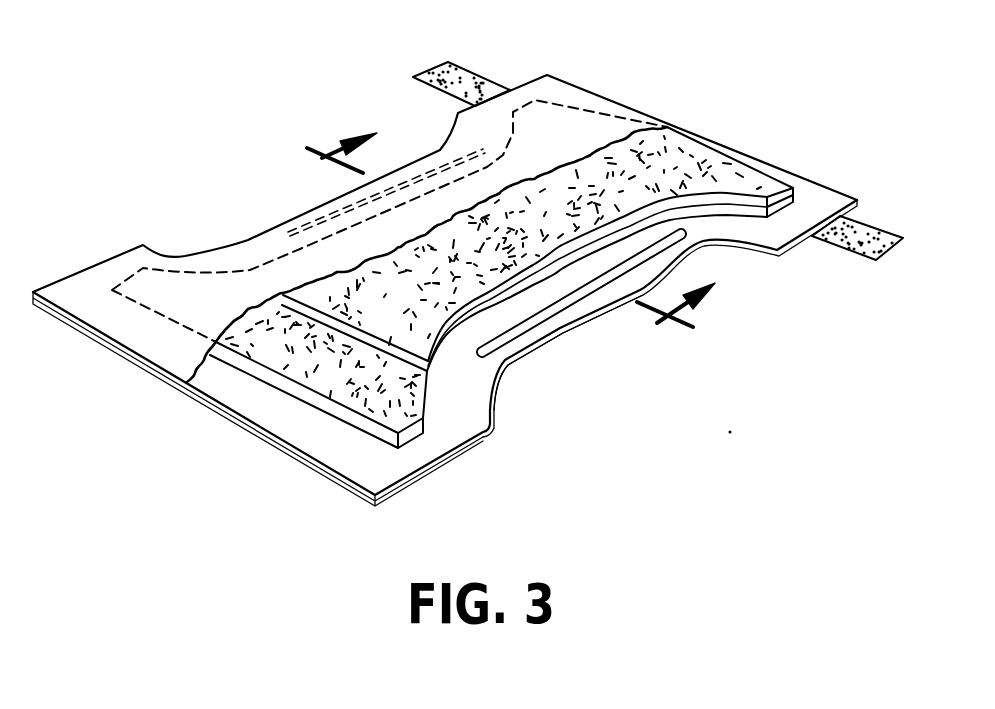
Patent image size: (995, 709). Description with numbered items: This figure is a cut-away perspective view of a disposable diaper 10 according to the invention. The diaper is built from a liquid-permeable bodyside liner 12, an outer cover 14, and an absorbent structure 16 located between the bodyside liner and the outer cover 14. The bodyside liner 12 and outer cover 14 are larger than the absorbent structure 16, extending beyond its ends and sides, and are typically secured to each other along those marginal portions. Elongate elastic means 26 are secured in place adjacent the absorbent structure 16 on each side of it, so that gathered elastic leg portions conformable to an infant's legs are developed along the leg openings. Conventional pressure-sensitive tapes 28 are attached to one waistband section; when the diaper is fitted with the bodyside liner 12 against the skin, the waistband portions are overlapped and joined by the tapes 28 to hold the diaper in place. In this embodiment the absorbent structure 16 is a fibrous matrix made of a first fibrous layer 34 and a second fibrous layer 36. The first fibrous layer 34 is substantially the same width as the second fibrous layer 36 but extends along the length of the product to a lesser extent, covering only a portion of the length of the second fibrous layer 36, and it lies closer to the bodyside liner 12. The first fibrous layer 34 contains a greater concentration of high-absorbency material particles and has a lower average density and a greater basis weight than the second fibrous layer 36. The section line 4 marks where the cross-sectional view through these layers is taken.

The disposable diaper 10 is at (812, 68).
The bodyside liner 12 is at (185, 355).
The outer cover 14 is at (470, 388).
The absorbent structure 16 is at (743, 167).
The elongate elastic means 26 is at (285, 236).
The pressure-sensitive tapes 28 is at (432, 64).
The first fibrous layer 34 is at (678, 157).
The second fibrous layer 36 is at (408, 414).
The section line 4- 4 is at (498, 247).